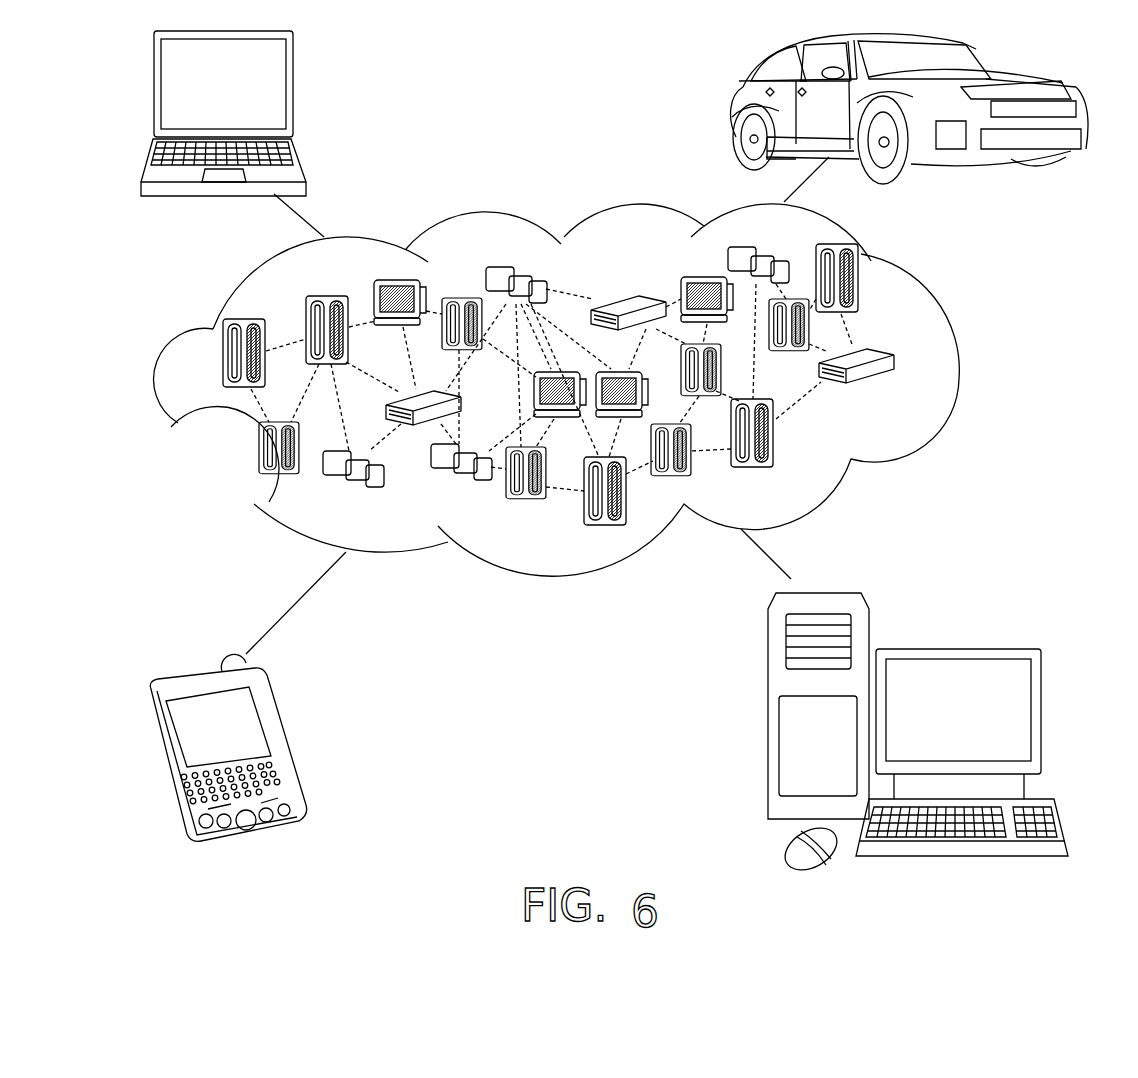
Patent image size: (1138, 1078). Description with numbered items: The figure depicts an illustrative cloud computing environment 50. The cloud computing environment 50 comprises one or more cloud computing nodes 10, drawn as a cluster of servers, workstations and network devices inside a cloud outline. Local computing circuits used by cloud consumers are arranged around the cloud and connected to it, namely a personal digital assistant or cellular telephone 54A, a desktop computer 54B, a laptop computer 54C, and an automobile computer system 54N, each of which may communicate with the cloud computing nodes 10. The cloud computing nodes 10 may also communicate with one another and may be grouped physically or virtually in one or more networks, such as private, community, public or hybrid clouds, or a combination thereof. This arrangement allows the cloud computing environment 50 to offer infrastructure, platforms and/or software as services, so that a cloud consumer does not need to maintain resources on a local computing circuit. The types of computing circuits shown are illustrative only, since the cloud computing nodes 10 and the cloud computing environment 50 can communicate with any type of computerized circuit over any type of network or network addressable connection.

The cloud computing node 10 is at (898, 390).
The cloud computing environment 50 is at (957, 366).
The personal digital assistant or cellular telephone 54A is at (282, 740).
The desktop computer 54B is at (955, 647).
The laptop computer 54C is at (292, 95).
The automobile computer system 54N is at (735, 110).